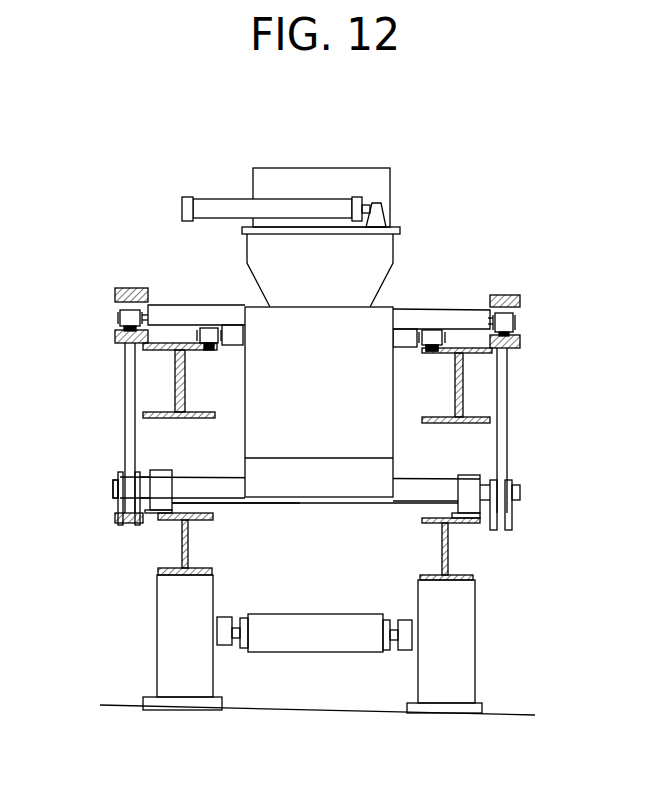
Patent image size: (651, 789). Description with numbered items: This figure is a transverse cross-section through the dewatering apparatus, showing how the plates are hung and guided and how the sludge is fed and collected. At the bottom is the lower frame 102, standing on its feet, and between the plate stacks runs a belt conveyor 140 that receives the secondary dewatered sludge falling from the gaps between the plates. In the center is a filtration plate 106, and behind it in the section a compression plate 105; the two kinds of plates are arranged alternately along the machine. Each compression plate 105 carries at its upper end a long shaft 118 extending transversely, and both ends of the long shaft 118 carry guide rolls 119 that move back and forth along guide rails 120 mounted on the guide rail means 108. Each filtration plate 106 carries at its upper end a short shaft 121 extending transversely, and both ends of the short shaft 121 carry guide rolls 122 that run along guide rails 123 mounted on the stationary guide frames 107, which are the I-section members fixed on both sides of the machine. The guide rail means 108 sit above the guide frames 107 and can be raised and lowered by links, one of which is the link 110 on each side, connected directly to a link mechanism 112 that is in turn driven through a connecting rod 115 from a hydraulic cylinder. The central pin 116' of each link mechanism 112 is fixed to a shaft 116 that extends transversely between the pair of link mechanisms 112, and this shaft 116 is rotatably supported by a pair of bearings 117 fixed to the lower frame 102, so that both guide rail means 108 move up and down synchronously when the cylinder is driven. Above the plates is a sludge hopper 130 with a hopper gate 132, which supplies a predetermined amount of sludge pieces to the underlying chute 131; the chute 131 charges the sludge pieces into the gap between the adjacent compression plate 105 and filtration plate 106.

The lower frame 102 is at (448, 548).
The compression plate 105 is at (302, 498).
The filtration plate 106 is at (345, 400).
The stationary guide frame 107 is at (176, 392).
The guide rail means 108 is at (133, 288).
The link 110 is at (125, 418).
The link mechanism 112 is at (113, 505).
The connecting rod 115 is at (130, 525).
The shaft 116 is at (236, 532).
The central pin 116' is at (89, 471).
The bearing 117 is at (160, 470).
The long shaft 118 is at (422, 310).
The guide roll 119 is at (120, 318).
The guide rail 120 is at (520, 341).
The short shaft 121 is at (410, 348).
The guide roll 122 is at (440, 343).
The guide rail 123 is at (432, 352).
The sludge hopper 130 is at (392, 170).
The chute 131 is at (400, 235).
The hopper gate 132 is at (217, 199).
The belt conveyor 140 is at (318, 613).